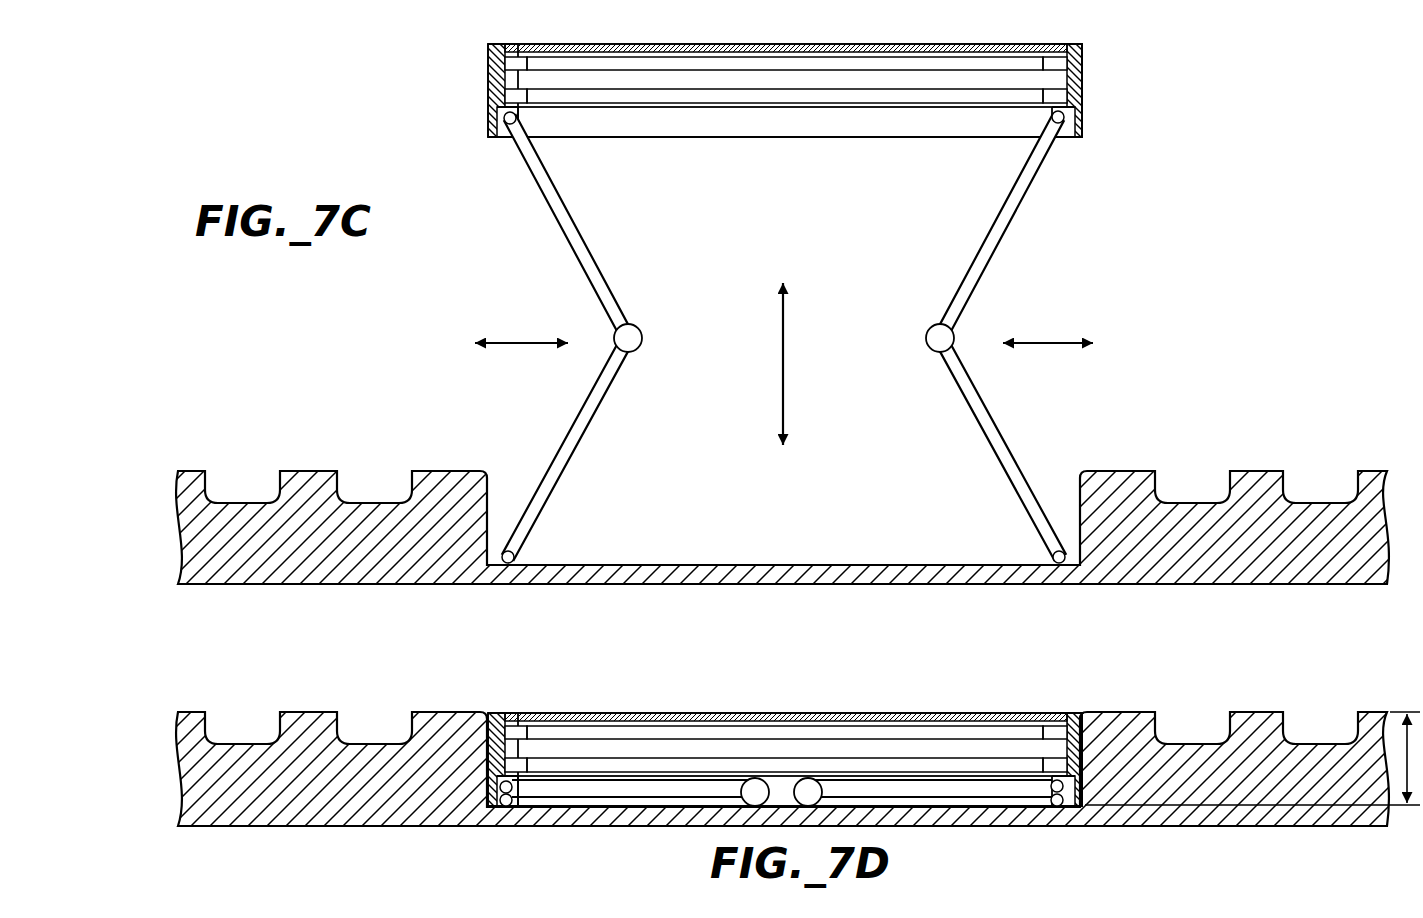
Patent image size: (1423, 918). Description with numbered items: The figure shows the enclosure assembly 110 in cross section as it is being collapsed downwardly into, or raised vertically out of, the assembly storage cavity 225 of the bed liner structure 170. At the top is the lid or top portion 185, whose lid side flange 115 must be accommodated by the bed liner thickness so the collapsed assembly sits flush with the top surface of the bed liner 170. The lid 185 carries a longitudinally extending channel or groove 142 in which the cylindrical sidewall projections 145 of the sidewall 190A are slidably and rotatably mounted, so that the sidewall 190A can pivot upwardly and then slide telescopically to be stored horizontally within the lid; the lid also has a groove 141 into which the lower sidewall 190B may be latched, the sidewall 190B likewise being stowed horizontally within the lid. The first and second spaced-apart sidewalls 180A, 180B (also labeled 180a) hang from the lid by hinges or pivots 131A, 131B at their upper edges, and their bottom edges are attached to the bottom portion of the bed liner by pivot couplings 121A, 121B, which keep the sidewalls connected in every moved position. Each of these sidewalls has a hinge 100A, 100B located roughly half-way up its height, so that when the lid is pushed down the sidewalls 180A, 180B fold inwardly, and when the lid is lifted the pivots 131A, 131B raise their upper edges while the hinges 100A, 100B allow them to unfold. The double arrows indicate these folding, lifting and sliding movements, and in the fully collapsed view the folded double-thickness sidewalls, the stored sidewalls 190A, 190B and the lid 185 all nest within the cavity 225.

In FIG. 7C, the enclosure assembly 110 is at (1178, 88).
In FIG. 7D, the enclosure assembly 110 is at (487, 710).
In FIG. 7D, the lid side flange 115 is at (1085, 790).
In FIG. 7C, the pivot coupling 121A is at (1045, 555).
In FIG. 7D, the pivot coupling 121A is at (1057, 806).
In FIG. 7C, the pivot coupling 121B is at (520, 555).
In FIG. 7D, the pivot coupling 121B is at (506, 806).
In FIG. 7C, the hinge or pivot 131A is at (1082, 118).
In FIG. 7D, the hinge or pivot 131A is at (1052, 790).
In FIG. 7C, the hinge or pivot 131B is at (505, 125).
In FIG. 7D, the hinge or pivot 131B is at (512, 790).
In FIG. 7C, the groove 141 is at (1040, 100).
In FIG. 7C, the channel or groove 142 is at (1050, 60).
In FIG. 7D, the channel or groove 142 is at (786, 749).
In FIG. 7C, the sidewall projection 145 is at (505, 56).
In FIG. 7D, the sidewall projection 145 is at (785, 759).
In FIG. 7C, the bed liner structure 170 is at (1140, 470).
In FIG. 7D, the bed liner structure 170 is at (782, 769).
In FIG. 7D, the first sidewall 180A is at (865, 800).
In FIG. 7C, the first sidewall 180a is at (1008, 262).
In FIG. 7C, the second sidewall 180B is at (545, 266).
In FIG. 7D, the second sidewall 180B is at (595, 800).
In FIG. 7C, the lid or top portion 185 is at (800, 45).
In FIG. 7D, the lid or top portion 185 is at (900, 713).
In FIG. 7C, the sidewall 190A is at (672, 62).
In FIG. 7D, the sidewall 190A is at (572, 740).
In FIG. 7C, the sidewall 190B is at (598, 100).
In FIG. 7D, the sidewall 190B is at (652, 770).
In FIG. 7C, the hinge 100A is at (960, 327).
In FIG. 7D, the hinge 100A is at (808, 790).
In FIG. 7C, the hinge 100B is at (913, 345).
In FIG. 7D, the hinge 100B is at (755, 790).
In FIG. 7C, the assembly storage cavity 225 is at (1053, 485).